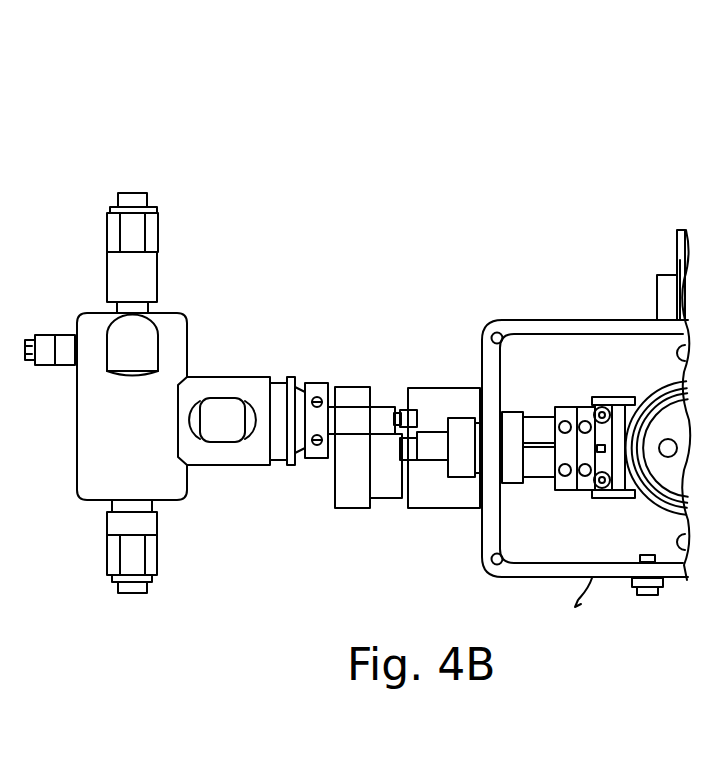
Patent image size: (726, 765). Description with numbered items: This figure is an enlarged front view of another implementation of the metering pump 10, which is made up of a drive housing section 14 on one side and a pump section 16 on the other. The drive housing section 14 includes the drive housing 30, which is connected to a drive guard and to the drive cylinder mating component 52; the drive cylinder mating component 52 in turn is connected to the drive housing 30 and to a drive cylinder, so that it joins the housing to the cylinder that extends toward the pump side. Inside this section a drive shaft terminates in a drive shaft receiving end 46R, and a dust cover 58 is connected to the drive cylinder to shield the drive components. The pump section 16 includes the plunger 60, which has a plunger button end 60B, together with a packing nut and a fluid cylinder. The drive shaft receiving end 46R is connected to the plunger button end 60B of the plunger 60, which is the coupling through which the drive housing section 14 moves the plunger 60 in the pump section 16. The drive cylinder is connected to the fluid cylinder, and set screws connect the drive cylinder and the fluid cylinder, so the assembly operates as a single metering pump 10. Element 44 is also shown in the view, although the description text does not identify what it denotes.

The metering pump 10 is at (472, 126).
The pump section 16 is at (280, 226).
The drive housing section 14 is at (567, 245).
The drive housing 30 is at (605, 320).
The plunger 60 is at (380, 410).
The plunger button end 60B is at (397, 411).
The dust cover 58 is at (457, 387).
The drive shaft receiving end 46R is at (418, 460).
The drive member 44 is at (434, 477).
The drive cylinder mating component 52 is at (513, 480).